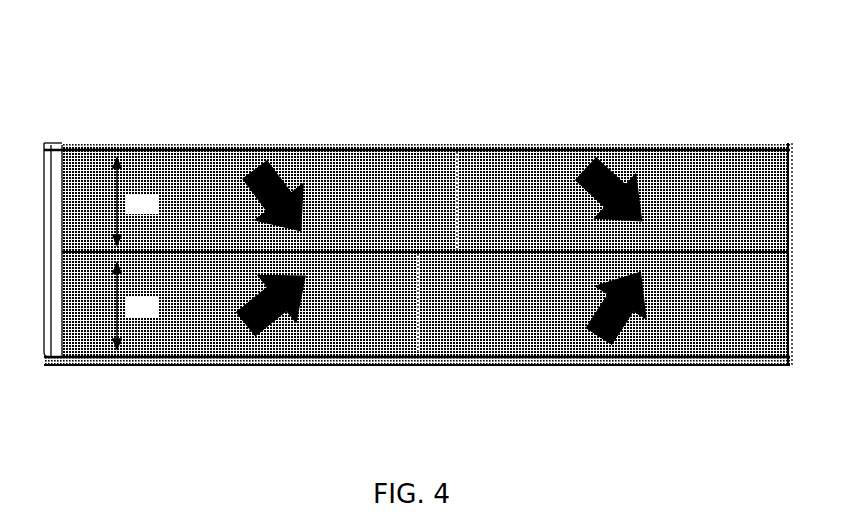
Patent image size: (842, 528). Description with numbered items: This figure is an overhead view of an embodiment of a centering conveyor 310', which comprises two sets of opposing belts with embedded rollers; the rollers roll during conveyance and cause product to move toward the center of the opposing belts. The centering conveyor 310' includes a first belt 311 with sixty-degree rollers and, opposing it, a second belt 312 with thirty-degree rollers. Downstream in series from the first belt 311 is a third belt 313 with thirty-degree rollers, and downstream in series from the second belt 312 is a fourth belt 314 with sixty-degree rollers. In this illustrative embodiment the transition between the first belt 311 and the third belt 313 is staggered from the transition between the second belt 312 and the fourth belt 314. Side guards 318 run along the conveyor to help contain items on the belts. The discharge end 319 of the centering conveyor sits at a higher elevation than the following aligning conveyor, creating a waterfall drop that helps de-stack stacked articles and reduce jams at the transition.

The centering conveyor 310' is at (422, 230).
The first belt 311 is at (162, 175).
The second belt 312 is at (143, 333).
The third belt 313 is at (488, 173).
The fourth belt 314 is at (535, 318).
The side guards 318 is at (323, 150).
The discharge end 319 is at (795, 190).